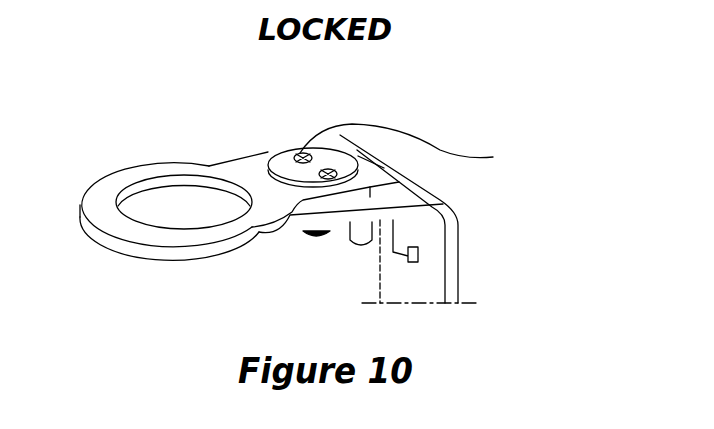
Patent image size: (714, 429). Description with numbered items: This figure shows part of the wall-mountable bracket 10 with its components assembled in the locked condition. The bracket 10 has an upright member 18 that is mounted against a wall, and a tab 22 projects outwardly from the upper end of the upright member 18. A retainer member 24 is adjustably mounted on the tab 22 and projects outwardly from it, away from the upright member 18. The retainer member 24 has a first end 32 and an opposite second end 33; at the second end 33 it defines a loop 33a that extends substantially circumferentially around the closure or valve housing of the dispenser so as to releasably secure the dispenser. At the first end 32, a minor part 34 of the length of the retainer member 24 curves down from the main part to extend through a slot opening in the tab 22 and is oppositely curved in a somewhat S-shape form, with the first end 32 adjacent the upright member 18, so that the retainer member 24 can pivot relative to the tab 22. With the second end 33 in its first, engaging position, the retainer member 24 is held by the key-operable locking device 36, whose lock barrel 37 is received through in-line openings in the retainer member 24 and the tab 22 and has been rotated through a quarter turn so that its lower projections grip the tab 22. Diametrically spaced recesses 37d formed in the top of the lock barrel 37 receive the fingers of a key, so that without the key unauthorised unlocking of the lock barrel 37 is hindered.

The wall-mountable bracket 10 is at (443, 90).
The upright member 18 is at (413, 296).
The tab 22 is at (370, 223).
The retainer member 24 is at (252, 172).
The first end 32 is at (418, 250).
The second end 33 is at (106, 254).
The loop 33a is at (147, 190).
The minor part 34 is at (420, 223).
The key-operable locking device 36 is at (286, 158).
The lock barrel 37 is at (320, 240).
The recess 37d is at (333, 172).